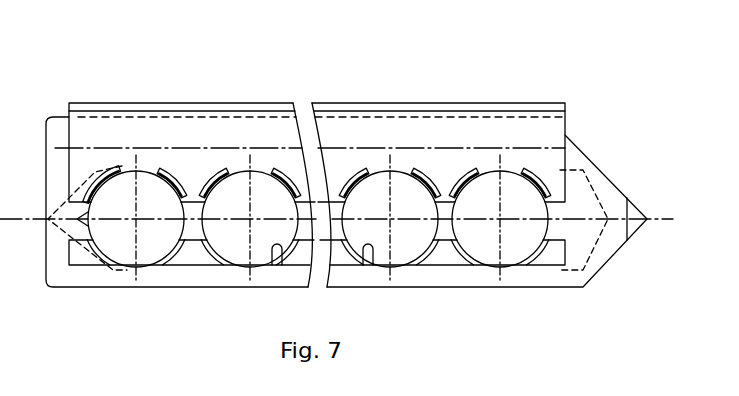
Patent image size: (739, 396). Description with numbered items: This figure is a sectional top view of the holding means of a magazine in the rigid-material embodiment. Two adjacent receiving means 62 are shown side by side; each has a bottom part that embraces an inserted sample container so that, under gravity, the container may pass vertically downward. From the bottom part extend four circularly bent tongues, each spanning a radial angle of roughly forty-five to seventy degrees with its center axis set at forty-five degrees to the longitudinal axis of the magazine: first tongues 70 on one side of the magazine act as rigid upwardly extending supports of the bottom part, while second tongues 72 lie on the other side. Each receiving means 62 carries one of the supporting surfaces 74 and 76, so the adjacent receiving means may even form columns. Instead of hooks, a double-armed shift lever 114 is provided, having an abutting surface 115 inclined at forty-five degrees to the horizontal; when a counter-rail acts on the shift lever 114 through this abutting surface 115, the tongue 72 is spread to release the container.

The receiving means 62 is at (263, 173).
The first tongues 70 is at (192, 253).
The second tongues 72 is at (214, 173).
The supporting surface 74 is at (270, 250).
The supporting surface 76 is at (372, 250).
The double-armed shift lever 114 is at (560, 137).
The abutting surface 115 is at (497, 110).